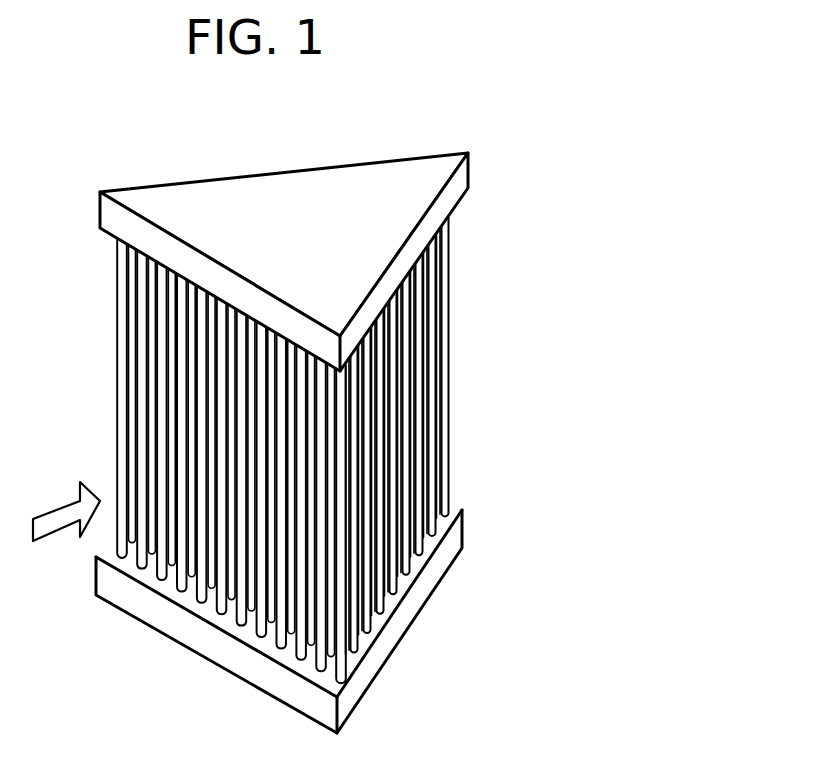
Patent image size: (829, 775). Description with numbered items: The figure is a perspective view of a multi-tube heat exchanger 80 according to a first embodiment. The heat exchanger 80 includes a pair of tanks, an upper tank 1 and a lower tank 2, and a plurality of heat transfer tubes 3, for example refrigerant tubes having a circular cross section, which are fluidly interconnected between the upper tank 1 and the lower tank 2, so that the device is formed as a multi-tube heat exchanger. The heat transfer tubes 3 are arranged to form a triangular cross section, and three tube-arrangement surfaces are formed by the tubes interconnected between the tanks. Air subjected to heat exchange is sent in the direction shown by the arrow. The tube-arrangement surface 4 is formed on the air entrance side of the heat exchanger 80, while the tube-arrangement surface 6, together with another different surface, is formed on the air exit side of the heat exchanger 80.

The multi-tube heat exchanger 80 is at (298, 158).
The upper tank 1 is at (194, 200).
The lower tank 2 is at (150, 615).
The heat transfer tubes 3 is at (120, 390).
The tube-arrangement surface 4 is at (150, 351).
The tube-arrangement surface 6 is at (416, 431).